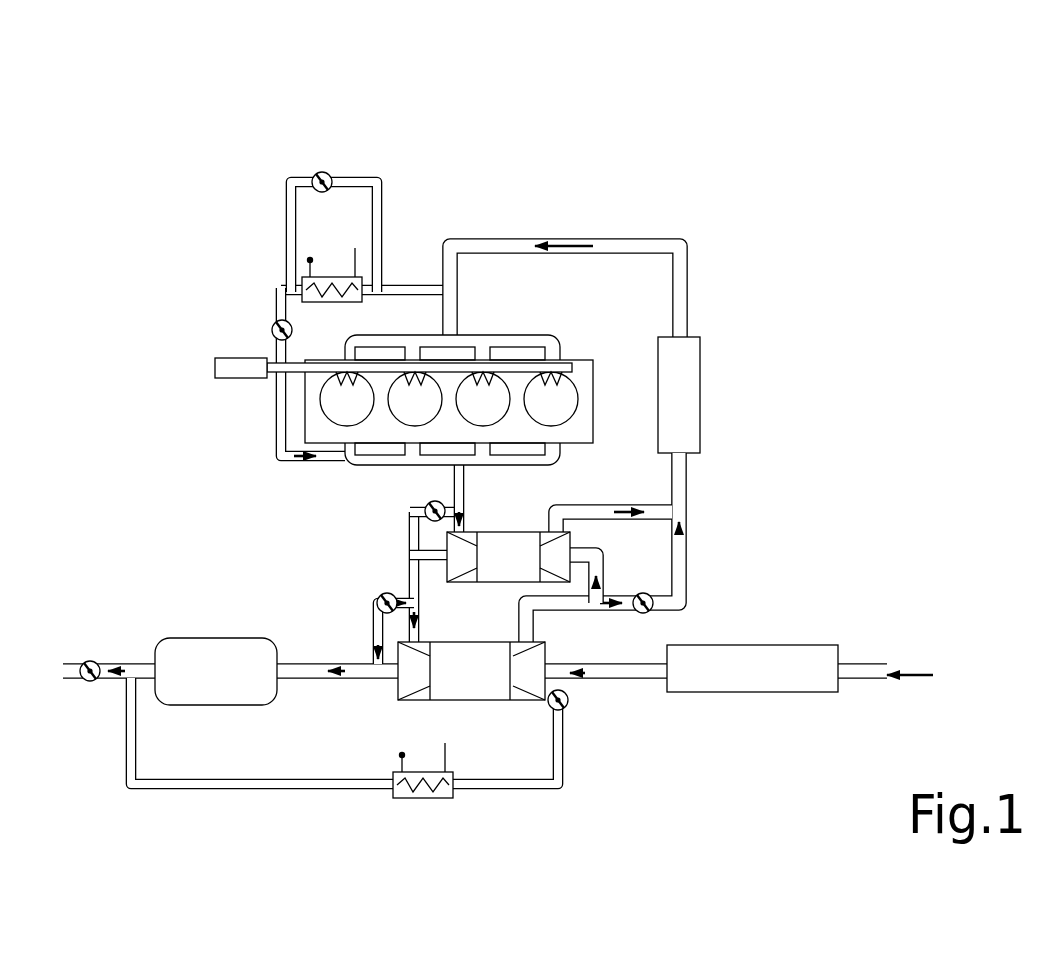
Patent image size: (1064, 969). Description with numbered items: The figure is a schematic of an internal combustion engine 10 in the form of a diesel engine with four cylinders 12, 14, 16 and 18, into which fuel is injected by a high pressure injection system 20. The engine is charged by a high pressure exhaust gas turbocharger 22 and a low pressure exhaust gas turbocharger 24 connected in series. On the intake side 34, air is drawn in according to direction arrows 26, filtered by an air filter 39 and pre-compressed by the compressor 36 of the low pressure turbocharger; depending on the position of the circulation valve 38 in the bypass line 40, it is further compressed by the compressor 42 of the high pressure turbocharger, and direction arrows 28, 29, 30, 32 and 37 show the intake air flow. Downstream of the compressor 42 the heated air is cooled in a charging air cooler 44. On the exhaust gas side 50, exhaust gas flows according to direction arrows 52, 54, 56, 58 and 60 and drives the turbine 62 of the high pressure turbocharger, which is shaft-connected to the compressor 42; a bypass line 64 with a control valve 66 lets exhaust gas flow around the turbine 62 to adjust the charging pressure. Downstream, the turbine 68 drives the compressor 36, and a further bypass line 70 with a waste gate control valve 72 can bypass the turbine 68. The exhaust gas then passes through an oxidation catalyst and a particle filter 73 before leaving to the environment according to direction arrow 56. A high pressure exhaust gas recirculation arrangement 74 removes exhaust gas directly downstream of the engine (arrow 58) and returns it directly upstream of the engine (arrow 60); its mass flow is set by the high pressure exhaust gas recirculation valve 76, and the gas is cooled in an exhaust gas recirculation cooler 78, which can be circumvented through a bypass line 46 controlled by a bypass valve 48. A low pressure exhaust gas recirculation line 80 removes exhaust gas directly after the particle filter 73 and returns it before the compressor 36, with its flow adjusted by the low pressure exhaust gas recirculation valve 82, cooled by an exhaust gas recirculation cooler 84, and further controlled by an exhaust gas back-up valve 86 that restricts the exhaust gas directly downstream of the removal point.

The internal combustion engine 10 is at (581, 366).
The cylinder 12 is at (548, 373).
The cylinder 14 is at (491, 371).
The cylinder 16 is at (405, 371).
The cylinder 18 is at (336, 371).
The high pressure injection system 20 is at (247, 389).
The high pressure exhaust gas turbocharger 22 is at (497, 558).
The low pressure exhaust gas turbocharger 24 is at (450, 677).
The direction arrows 26 is at (627, 682).
The direction arrow 28 is at (602, 557).
The direction arrow 29 is at (606, 609).
The direction arrow 30 is at (638, 557).
The direction arrow 32 is at (614, 488).
The intake side 34 is at (595, 241).
The compressor 36 is at (450, 708).
The direction arrow 37 is at (562, 242).
The circulation valve 38 is at (645, 614).
The air filter 39 is at (820, 692).
The bypass line 40 is at (673, 557).
The compressor 42 is at (569, 499).
The charging air cooler 44 is at (668, 395).
The bypass line 46 is at (293, 178).
The bypass valve 48 is at (324, 172).
The exhaust gas side 50 is at (236, 399).
The direction arrow 52 is at (442, 500).
The direction arrow 54 is at (357, 679).
The direction arrow 56 is at (132, 664).
The direction arrow 58 is at (312, 399).
The direction arrow 60 is at (412, 284).
The turbine 62 is at (456, 592).
The bypass line 64 is at (376, 525).
The control valve 66 is at (409, 508).
The turbine 68 is at (410, 706).
The bypass line 70 is at (360, 630).
The control valve 72 is at (386, 592).
The particle filter 73 is at (223, 705).
The high pressure exhaust gas recirculation arrangement 74 is at (270, 258).
The high pressure exhaust gas recirculation valve 76 is at (271, 330).
The exhaust gas recirculation cooler 78 is at (329, 270).
The low pressure exhaust gas recirculation line 80 is at (129, 799).
The low pressure exhaust gas recirculation valve 82 is at (570, 706).
The exhaust gas recirculation cooler 84 is at (418, 800).
The exhaust gas back-up valve 86 is at (88, 683).